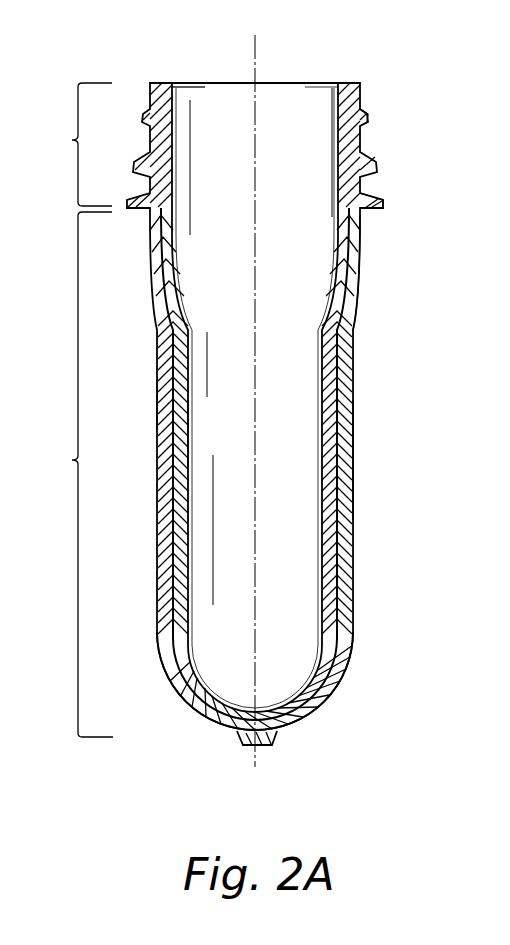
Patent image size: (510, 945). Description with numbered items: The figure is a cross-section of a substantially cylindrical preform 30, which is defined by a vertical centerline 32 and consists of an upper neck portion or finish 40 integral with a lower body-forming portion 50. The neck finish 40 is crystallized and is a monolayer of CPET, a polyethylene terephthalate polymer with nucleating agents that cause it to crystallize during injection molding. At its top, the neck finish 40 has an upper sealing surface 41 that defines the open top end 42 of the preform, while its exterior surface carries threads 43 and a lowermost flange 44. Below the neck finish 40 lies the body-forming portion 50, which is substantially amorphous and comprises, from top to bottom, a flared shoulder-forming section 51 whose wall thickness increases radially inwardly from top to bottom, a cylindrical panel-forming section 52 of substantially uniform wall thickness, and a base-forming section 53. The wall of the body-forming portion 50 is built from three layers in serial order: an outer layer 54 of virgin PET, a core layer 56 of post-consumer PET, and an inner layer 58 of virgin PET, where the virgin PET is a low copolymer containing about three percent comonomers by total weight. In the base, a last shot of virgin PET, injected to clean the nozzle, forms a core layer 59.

The preform 30 is at (386, 327).
The vertical centerline 32 is at (256, 571).
The neck portion or finish 40 is at (209, 145).
The upper sealing surface 41 is at (350, 83).
The open top end 42 is at (297, 84).
The threads 43 is at (368, 118).
The lowermost flange 44 is at (386, 209).
The body-forming portion 50 is at (197, 474).
The flared shoulder-forming section 51 is at (361, 268).
The cylindrical panel-forming section 52 is at (352, 471).
The base-forming section 53 is at (320, 714).
The outer layer 54 is at (160, 406).
The core layer 56 is at (173, 437).
The inner layer 58 is at (188, 436).
The core layer in the base 59 is at (262, 746).